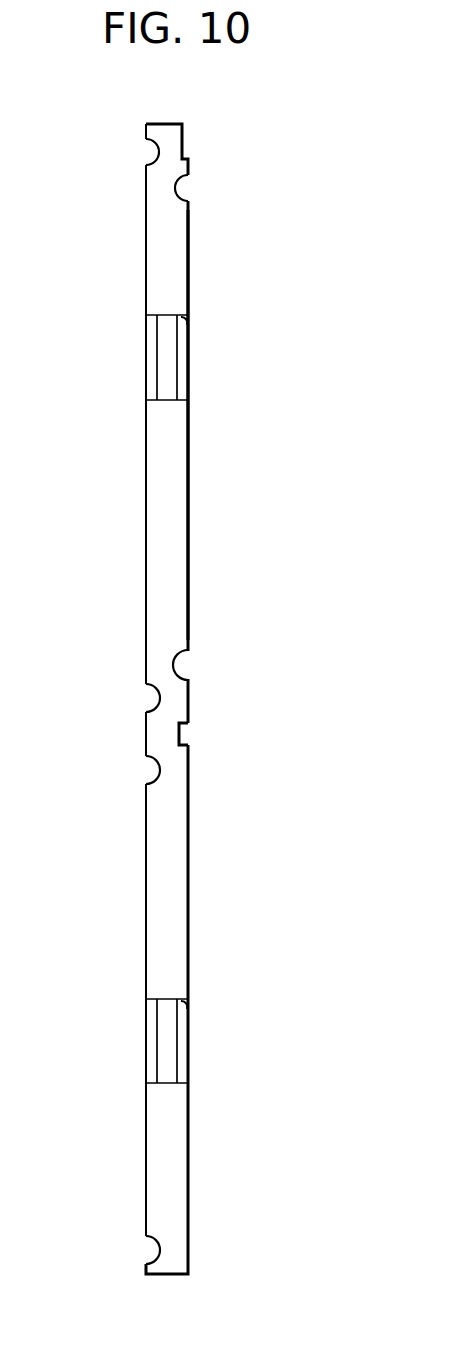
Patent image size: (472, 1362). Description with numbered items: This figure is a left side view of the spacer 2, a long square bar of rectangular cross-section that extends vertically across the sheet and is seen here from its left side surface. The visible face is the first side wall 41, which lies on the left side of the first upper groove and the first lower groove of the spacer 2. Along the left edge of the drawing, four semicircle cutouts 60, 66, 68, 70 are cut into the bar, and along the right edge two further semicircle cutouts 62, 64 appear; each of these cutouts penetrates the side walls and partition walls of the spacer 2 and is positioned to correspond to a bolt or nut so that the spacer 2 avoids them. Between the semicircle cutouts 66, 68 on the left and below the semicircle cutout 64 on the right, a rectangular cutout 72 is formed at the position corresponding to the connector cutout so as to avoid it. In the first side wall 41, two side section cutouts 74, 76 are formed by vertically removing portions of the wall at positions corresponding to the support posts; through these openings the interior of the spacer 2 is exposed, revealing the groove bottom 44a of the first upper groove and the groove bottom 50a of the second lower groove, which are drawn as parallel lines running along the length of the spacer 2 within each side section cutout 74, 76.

The spacer 2 is at (207, 120).
The first side wall 41 is at (173, 257).
The groove bottom of the first upper groove 44a is at (176, 368).
The groove bottom of the second lower groove 50a is at (157, 356).
The semicircle cutout 60 is at (158, 154).
The semicircle cutout 62 is at (178, 189).
The semicircle cutout 64 is at (176, 668).
The semicircle cutout 66 is at (160, 698).
The semicircle cutout 68 is at (160, 769).
The semicircle cutout 70 is at (160, 1250).
The rectangular cutout 72 is at (181, 731).
The side section cutout 74 is at (182, 320).
The side section cutout 76 is at (182, 1004).